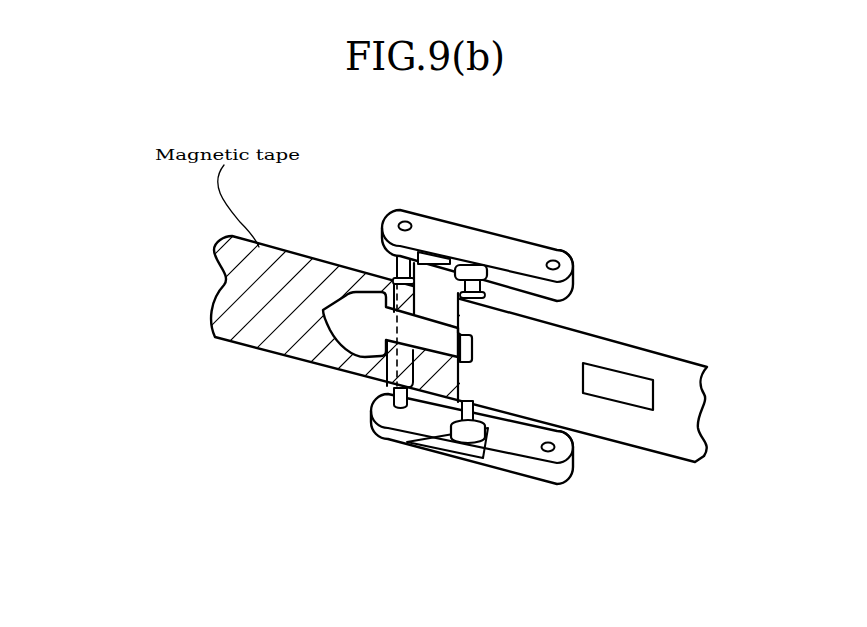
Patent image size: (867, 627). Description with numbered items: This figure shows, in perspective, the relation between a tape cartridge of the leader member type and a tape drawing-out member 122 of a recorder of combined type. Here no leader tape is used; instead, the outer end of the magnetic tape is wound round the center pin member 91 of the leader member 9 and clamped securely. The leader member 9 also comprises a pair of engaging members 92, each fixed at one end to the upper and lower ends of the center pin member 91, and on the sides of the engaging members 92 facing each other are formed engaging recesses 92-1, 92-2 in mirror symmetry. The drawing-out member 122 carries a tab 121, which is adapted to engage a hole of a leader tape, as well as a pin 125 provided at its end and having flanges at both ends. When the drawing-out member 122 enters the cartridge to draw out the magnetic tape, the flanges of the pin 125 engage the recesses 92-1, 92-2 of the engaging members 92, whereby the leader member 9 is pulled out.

The leader member 9 is at (464, 354).
The center pin member 91 is at (382, 258).
The engaging members 92 is at (483, 228).
The engaging recess 92-1 is at (473, 452).
The engaging recess 92-2 is at (443, 252).
The tab 121 is at (347, 335).
The tape drawing-out member 122 is at (630, 420).
The pin 125 is at (458, 265).